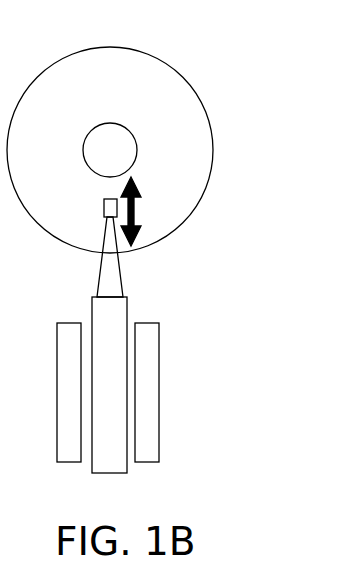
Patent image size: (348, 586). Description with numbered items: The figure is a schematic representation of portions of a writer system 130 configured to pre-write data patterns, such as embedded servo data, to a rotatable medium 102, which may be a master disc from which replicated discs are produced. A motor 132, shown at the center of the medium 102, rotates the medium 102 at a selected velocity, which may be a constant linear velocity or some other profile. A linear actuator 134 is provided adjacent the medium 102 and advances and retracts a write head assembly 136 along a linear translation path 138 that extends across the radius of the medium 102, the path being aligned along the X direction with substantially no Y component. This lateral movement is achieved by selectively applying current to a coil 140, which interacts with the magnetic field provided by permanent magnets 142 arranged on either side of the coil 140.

The medium 102 is at (125, 65).
The writer system 130 is at (263, 95).
The motor 132 is at (106, 151).
The linear actuator 134 is at (192, 419).
The write head assembly 136 is at (103, 212).
The linear translation path 138 is at (137, 213).
The coil 140 is at (111, 465).
The permanent magnets 142 is at (62, 392).